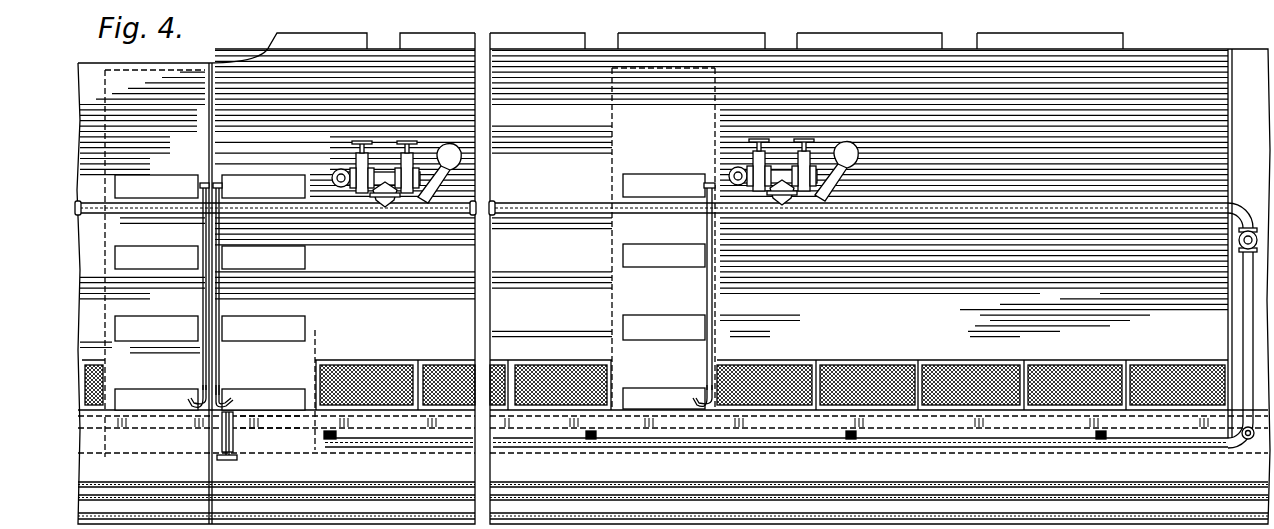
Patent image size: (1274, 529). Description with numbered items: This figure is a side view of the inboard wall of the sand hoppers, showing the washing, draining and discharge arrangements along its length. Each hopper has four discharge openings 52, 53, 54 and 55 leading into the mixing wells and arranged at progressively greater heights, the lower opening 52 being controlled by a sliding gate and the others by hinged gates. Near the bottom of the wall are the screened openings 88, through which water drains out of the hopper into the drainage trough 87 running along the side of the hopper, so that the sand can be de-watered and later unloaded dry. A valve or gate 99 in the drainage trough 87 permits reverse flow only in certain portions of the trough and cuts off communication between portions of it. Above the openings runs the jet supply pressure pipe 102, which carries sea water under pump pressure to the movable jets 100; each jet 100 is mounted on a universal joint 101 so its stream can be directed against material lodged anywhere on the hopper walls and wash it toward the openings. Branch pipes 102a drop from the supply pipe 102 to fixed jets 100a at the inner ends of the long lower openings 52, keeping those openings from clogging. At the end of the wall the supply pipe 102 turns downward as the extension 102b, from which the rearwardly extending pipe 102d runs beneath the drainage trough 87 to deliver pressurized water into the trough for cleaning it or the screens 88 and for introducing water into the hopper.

The lower discharge opening 52 is at (130, 400).
The discharge opening 53 is at (157, 326).
The discharge opening 54 is at (153, 260).
The upper discharge opening 55 is at (168, 186).
The drainage trough 87 is at (262, 422).
The screened opening 88 is at (440, 368).
The valve or gate 99 is at (217, 442).
The movable jet 100 is at (445, 200).
The fixed jet 100a is at (262, 385).
The universal joint 101 is at (440, 158).
The jet supply pressure pipe 102 is at (952, 205).
The fixed jet supply pipe 102a is at (205, 302).
The downward extension of jet supply pipe 102b is at (1248, 331).
The rearwardly extending pipe 102d is at (766, 441).